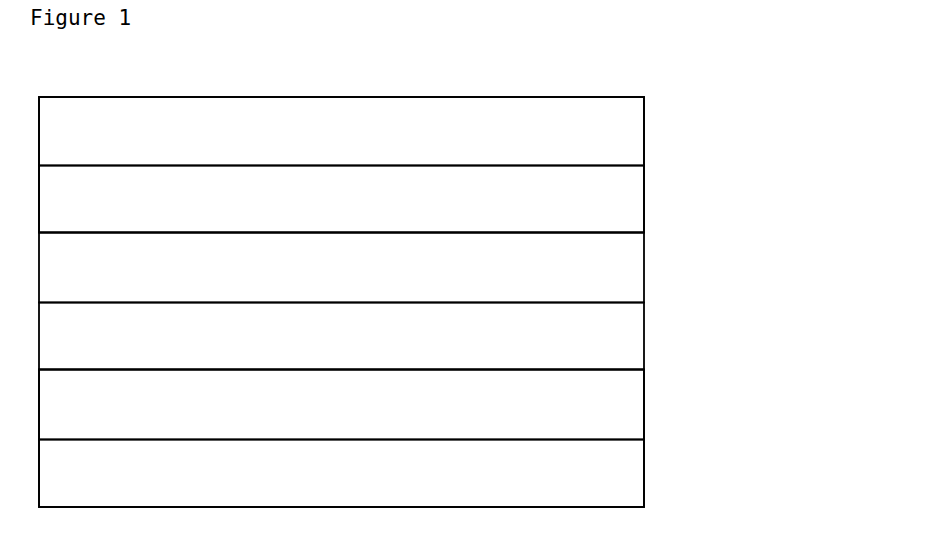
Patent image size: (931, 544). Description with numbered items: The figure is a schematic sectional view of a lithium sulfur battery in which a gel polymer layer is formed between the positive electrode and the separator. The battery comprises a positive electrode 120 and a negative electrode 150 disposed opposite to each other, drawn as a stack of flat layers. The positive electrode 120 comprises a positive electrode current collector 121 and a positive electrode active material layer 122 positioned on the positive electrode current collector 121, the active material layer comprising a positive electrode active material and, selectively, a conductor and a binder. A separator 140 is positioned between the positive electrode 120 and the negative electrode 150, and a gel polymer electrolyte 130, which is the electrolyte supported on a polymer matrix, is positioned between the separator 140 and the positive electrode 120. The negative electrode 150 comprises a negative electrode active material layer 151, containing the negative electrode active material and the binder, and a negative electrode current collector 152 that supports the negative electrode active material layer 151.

The positive electrode 120 is at (767, 55).
The positive electrode current collector 121 is at (644, 133).
The positive electrode active material layer 122 is at (644, 207).
The gel polymer electrolyte 130 is at (644, 273).
The separator 140 is at (644, 345).
The negative electrode 150 is at (767, 328).
The negative electrode active material layer 151 is at (644, 415).
The negative electrode current collector 152 is at (644, 477).